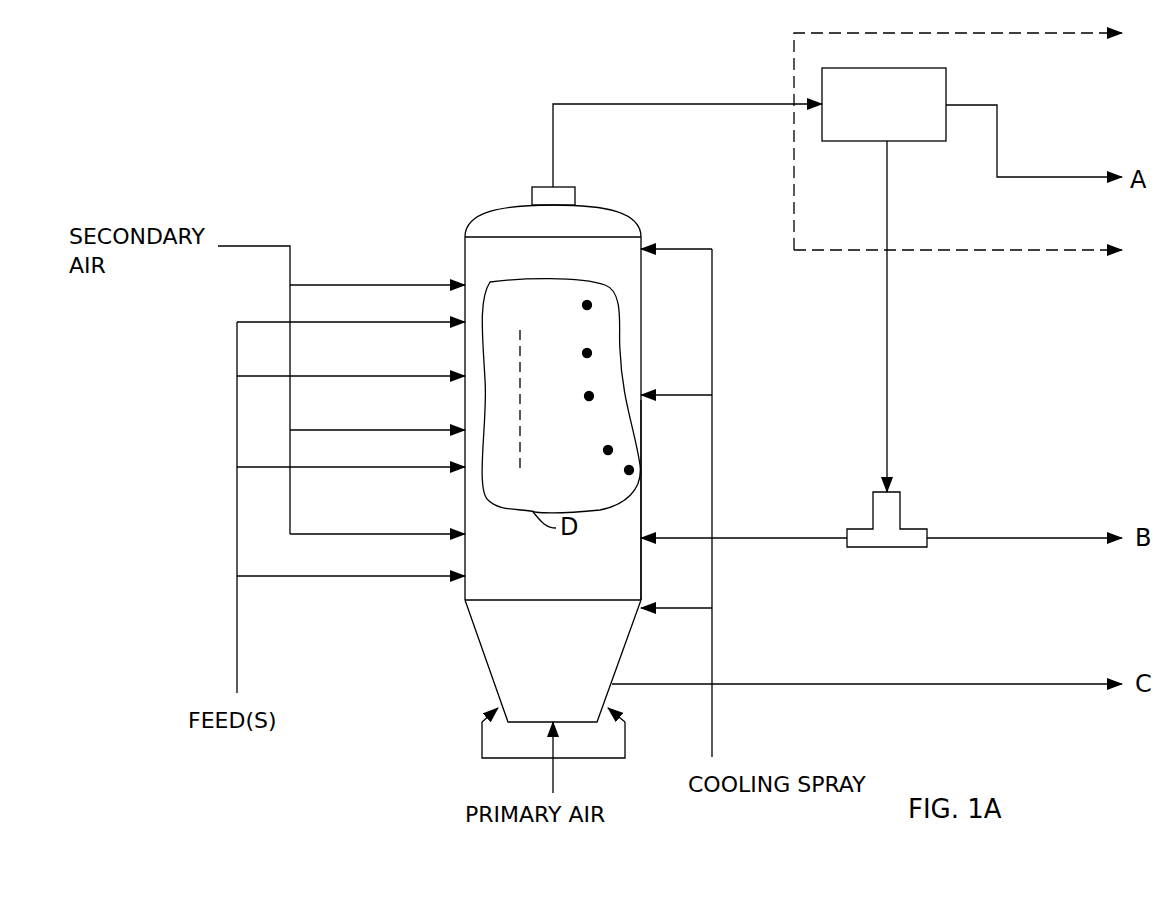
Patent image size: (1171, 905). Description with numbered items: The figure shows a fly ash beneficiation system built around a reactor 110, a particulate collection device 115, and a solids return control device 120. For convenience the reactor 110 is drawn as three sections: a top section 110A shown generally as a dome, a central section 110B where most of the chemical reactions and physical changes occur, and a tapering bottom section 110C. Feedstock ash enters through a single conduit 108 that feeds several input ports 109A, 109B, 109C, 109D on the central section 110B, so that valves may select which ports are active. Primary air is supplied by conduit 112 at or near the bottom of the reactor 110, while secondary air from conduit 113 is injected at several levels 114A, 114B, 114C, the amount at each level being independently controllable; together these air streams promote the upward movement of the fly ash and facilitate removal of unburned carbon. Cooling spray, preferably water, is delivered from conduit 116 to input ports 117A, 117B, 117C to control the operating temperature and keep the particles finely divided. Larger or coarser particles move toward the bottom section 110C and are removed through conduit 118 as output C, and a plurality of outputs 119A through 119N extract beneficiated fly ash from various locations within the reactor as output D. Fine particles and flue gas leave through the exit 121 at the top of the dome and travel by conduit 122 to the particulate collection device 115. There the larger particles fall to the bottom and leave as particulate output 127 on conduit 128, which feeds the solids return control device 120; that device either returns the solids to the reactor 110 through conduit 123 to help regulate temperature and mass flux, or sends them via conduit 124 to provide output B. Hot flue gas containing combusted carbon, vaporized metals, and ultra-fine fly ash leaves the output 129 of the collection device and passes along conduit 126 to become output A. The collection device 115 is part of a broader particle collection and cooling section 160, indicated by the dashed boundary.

The conduit 108 is at (245, 631).
The input port 109A is at (440, 317).
The input port 109B is at (445, 362).
The input port 109C is at (447, 457).
The input port 109D is at (445, 570).
The reactor 110 is at (525, 271).
The top section 110A is at (600, 195).
The central section 110B is at (648, 492).
The bottom section 110C is at (480, 668).
The primary air conduit 112 is at (560, 773).
The secondary air conduit 113 is at (262, 237).
The secondary air input port 114A is at (458, 278).
The secondary air input port 114B is at (457, 422).
The secondary air input port 114C is at (455, 525).
The particulate collection device 115 is at (900, 103).
The cooling spray conduit 116 is at (718, 648).
The cooling spray input port 117A is at (645, 238).
The cooling spray input port 117B is at (648, 382).
The cooling spray input port 117C is at (645, 607).
The conduit 118 is at (862, 680).
The output 119A is at (578, 305).
The output 119N is at (618, 477).
The solids return control device 120 is at (912, 516).
The exit 121 is at (548, 181).
The conduit 122 is at (585, 100).
The conduit 123 is at (808, 533).
The conduit 124 is at (1020, 532).
The conduit 126 is at (1087, 185).
The particulate output 127 is at (898, 147).
The conduit 128 is at (897, 312).
The output 129 is at (952, 93).
The particle collection and cooling section 160 is at (968, 254).